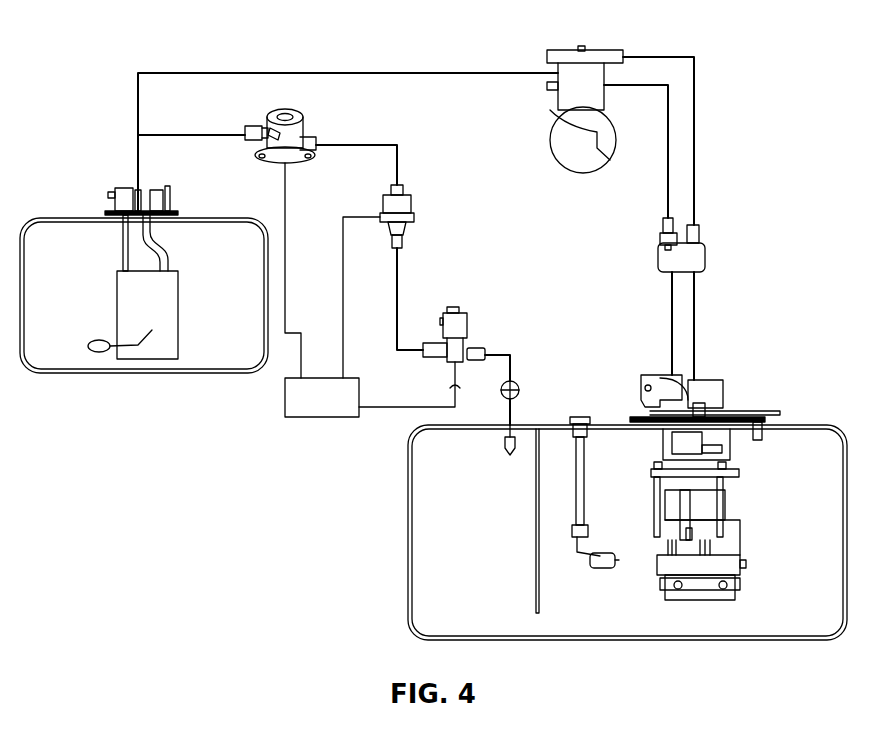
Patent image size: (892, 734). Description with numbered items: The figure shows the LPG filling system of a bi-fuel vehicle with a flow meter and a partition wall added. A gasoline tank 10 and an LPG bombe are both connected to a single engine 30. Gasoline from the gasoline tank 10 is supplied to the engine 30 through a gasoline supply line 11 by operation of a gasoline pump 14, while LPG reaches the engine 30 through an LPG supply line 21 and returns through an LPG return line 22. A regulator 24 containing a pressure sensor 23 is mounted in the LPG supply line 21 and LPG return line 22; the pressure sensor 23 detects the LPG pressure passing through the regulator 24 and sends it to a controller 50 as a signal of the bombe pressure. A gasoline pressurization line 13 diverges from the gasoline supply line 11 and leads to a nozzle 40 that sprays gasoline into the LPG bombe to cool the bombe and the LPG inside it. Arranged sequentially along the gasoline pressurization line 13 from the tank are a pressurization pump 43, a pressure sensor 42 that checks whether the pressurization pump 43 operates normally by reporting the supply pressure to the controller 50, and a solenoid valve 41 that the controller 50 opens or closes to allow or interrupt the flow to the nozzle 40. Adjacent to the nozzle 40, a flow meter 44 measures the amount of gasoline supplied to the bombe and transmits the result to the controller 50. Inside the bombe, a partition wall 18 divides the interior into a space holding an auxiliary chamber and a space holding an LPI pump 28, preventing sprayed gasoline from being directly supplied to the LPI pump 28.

The gasoline tank 10 is at (200, 378).
The gasoline supply line 11 is at (140, 104).
The gasoline pressurization line 13 is at (208, 134).
The gasoline pump 14 is at (160, 313).
The partition wall 18 is at (536, 512).
The LPG supply line 21 is at (668, 335).
The LPG return line 22 is at (698, 335).
The pressure sensor 23 is at (660, 237).
The regulator 24 is at (695, 260).
The LPI pump 28 is at (740, 540).
The engine 30 is at (560, 165).
The nozzle 40 is at (507, 443).
The solenoid valve 41 is at (470, 322).
The pressure sensor 42 is at (415, 218).
The pressurization pump 43 is at (303, 120).
The flow meter 44 is at (518, 385).
The controller 50 is at (302, 420).